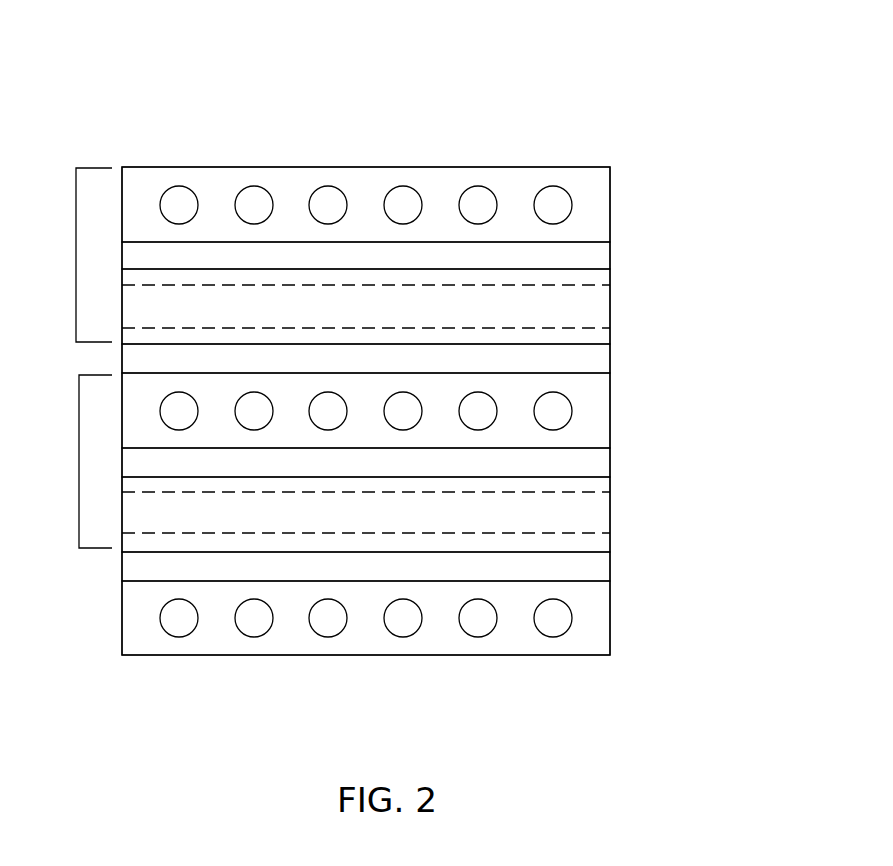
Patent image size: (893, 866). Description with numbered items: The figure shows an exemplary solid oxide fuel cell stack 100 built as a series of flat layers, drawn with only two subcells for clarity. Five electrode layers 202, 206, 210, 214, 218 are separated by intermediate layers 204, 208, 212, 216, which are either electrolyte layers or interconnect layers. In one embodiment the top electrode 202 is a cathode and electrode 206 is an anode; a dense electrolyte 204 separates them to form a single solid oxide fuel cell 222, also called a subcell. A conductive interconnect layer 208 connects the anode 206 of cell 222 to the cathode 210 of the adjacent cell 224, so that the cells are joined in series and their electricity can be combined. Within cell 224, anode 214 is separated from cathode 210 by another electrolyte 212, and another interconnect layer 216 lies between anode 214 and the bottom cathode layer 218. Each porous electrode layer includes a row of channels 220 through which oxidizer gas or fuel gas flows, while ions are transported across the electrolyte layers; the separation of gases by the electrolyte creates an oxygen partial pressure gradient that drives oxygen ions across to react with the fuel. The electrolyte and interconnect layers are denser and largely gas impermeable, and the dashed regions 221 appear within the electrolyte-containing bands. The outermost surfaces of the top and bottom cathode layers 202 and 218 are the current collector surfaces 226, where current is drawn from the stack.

The stacked battery / device 100 is at (540, 72).
The electrode layer (cathode) 202 is at (595, 215).
The electrolyte layer 204 is at (605, 260).
The electrode layer (anode) 206 is at (600, 308).
The interconnect layer 208 is at (605, 353).
The electrode layer (cathode) 210 is at (597, 437).
The electrolyte layer 212 is at (598, 468).
The electrode layer (anode) 214 is at (603, 518).
The interconnect layer 216 is at (603, 570).
The electrode layer (cathode) 218 is at (602, 618).
The channels 220 is at (252, 200).
The embedded element (dashed region) 221 is at (387, 316).
The solid oxide fuel cell (subcell) 222 is at (76, 257).
The adjacent cell (subcell) 224 is at (79, 465).
The current collector surfaces 226 is at (465, 167).